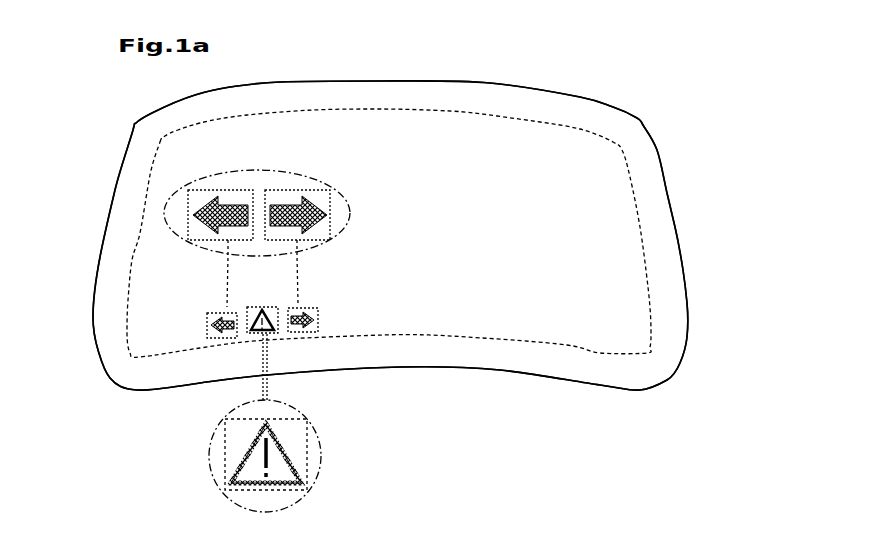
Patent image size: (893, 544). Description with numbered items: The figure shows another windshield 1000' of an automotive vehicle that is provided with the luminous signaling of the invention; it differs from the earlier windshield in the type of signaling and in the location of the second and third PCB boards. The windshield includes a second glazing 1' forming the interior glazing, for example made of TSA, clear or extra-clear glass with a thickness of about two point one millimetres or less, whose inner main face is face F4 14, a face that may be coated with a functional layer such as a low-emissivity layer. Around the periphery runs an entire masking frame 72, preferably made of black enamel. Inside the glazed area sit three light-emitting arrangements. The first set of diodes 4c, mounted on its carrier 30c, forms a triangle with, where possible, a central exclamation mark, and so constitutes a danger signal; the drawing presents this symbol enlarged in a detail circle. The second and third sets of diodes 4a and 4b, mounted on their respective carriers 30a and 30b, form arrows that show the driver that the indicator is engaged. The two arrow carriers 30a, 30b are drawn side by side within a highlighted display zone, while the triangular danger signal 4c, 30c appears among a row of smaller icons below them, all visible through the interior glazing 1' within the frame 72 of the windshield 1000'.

The masking frame 72 is at (128, 162).
The windshield 1000' is at (425, 235).
The second glazing 1' is at (389, 233).
The face F4 14 is at (267, 161).
The carrier 30a is at (188, 227).
The carrier 30b is at (302, 191).
The carrier 30c is at (307, 430).
The second set of diodes 4a is at (203, 240).
The third set of diodes 4b is at (324, 190).
The first set of diodes 4c is at (290, 463).